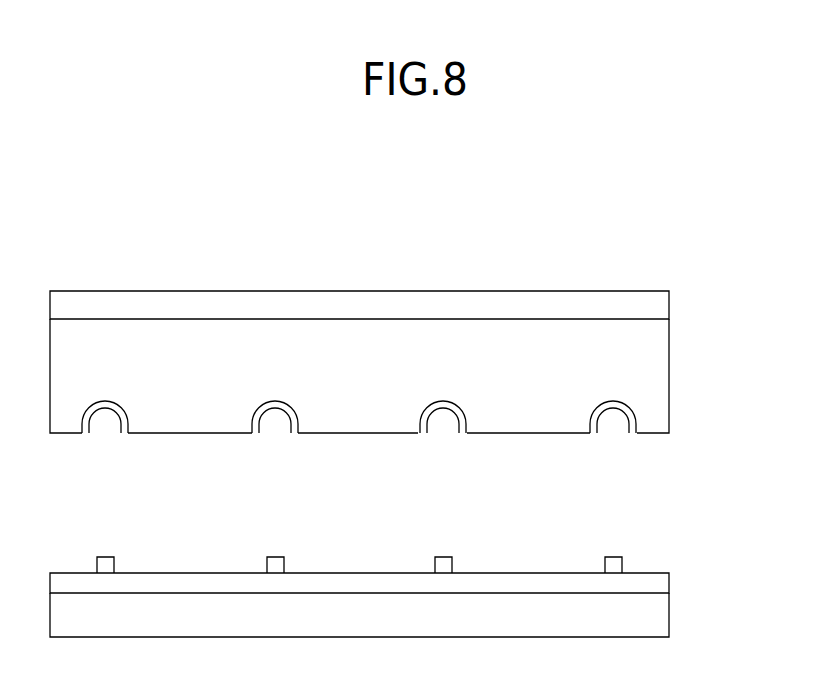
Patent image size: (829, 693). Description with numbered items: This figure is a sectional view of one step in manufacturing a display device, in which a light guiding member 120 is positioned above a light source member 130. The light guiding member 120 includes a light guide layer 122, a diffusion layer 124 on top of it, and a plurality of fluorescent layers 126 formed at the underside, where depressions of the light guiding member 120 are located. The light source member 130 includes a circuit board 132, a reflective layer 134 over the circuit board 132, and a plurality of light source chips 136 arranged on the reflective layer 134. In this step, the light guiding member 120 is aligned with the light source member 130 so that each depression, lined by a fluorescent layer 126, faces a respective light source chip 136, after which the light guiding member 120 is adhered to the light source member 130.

The light guiding member 120 is at (416, 362).
The light guide layer 122 is at (653, 339).
The diffusion layer 124 is at (653, 303).
The fluorescent layers 126 is at (613, 401).
The light source member 130 is at (416, 593).
The circuit board 132 is at (653, 613).
The reflective layer 134 is at (653, 584).
The light source chips 136 is at (622, 561).